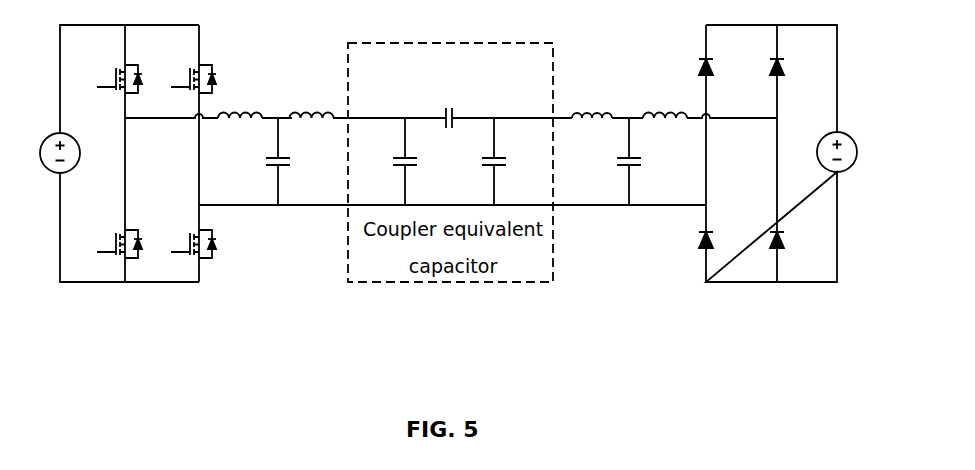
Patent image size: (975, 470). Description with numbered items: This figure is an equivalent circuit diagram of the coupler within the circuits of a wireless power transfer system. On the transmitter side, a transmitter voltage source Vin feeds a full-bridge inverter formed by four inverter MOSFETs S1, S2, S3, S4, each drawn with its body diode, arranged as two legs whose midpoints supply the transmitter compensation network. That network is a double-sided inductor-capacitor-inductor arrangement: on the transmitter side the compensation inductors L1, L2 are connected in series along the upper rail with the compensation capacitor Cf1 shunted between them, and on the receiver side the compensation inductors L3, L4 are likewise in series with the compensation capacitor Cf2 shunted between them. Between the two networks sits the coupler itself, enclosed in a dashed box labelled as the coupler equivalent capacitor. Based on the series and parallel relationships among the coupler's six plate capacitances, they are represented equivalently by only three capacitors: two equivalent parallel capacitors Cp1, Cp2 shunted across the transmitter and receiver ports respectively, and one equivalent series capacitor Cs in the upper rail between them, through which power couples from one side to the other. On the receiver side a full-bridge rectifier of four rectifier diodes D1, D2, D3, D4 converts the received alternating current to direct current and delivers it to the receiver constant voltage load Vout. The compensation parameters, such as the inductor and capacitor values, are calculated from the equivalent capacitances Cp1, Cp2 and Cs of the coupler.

The transmitter voltage source Vin is at (48, 140).
The inverter MOSFET S1 is at (111, 71).
The inverter MOSFET S2 is at (188, 71).
The inverter MOSFET S3 is at (111, 235).
The inverter MOSFET S4 is at (188, 235).
The compensation inductor L1 is at (240, 102).
The compensation inductor L2 is at (312, 102).
The compensation inductor L3 is at (592, 102).
The compensation inductor L4 is at (665, 102).
The compensation capacitor Cf1 is at (259, 161).
The compensation capacitor Cf2 is at (647, 161).
The equivalent parallel capacitor Cp1 is at (386, 161).
The equivalent parallel capacitor Cp2 is at (510, 161).
The equivalent series capacitor Cs is at (448, 103).
The rectifier diode D1 is at (720, 68).
The rectifier diode D2 is at (791, 68).
The rectifier diode D3 is at (720, 241).
The rectifier diode D4 is at (791, 241).
The receiver constant voltage load Vout is at (853, 138).